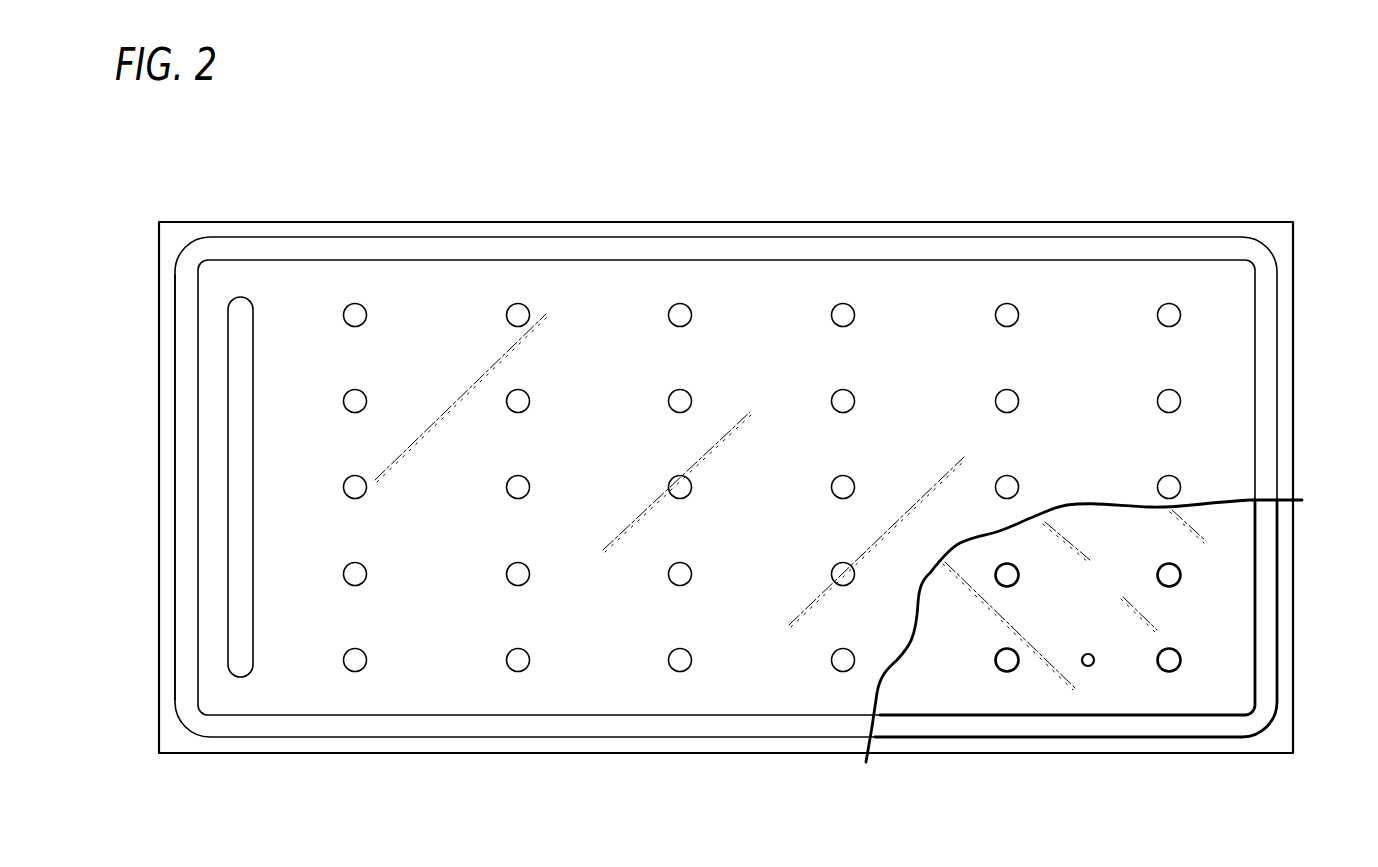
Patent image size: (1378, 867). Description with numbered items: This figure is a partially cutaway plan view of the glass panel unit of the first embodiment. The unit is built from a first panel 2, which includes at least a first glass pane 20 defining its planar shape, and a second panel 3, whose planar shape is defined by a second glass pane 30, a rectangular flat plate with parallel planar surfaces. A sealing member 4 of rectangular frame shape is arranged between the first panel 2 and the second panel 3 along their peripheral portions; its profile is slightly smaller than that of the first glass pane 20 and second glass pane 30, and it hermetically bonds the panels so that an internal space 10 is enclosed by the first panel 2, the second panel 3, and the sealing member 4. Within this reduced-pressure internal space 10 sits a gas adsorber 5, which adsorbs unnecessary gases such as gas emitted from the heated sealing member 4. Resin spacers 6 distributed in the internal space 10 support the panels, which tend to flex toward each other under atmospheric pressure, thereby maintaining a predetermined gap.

The first panel 2 is at (1284, 240).
The second panel 3 is at (1278, 733).
The sealing member 4 is at (193, 513).
The gas adsorber 5 is at (242, 527).
The spacers 6 is at (1170, 316).
The internal space 10 is at (1230, 575).
The first glass pane 20 is at (1193, 220).
The second glass pane 30 is at (1284, 648).